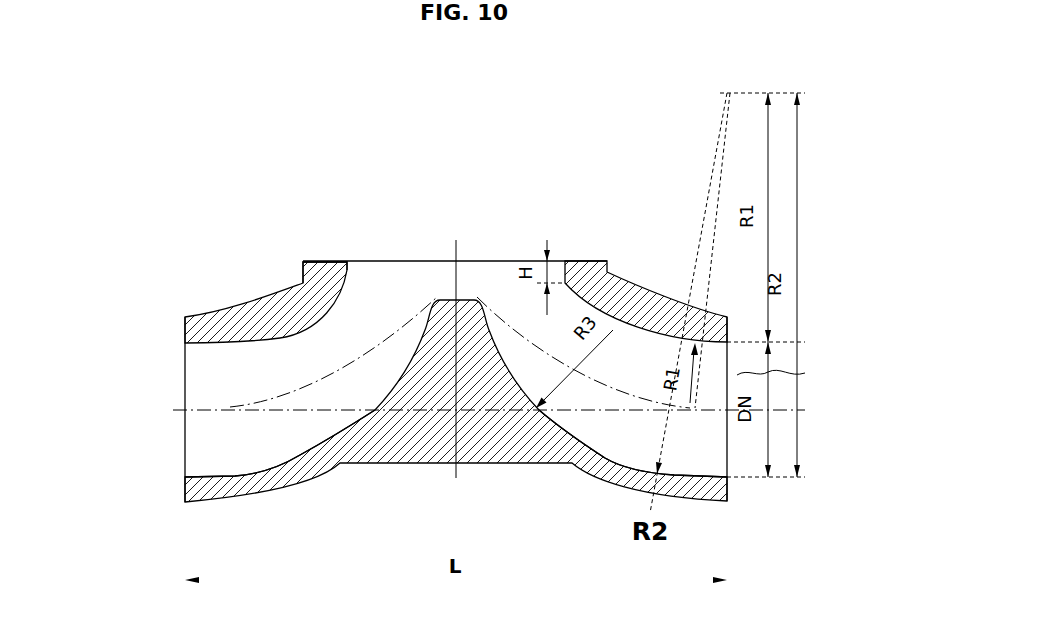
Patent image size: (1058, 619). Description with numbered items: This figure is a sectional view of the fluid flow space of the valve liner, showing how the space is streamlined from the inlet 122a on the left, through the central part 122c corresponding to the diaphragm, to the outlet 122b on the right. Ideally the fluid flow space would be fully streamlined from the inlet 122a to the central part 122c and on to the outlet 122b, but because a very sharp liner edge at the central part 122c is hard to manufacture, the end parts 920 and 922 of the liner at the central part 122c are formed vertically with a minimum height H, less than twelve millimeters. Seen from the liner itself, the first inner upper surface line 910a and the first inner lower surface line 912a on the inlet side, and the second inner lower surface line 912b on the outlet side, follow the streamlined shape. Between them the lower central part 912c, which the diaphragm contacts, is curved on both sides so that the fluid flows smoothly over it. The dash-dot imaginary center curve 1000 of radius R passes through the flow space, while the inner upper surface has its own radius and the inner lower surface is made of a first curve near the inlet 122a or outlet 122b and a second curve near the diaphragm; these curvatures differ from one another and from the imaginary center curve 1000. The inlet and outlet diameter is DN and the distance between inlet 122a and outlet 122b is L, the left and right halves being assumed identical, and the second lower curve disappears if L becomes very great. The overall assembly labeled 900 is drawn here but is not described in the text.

The inlet 122a is at (168, 388).
The outlet 122b is at (752, 377).
The central part 122c is at (401, 260).
The flow guide member 900 is at (436, 378).
The first inner upper surface line 910a is at (233, 309).
The first inner lower surface line 912a is at (270, 478).
The second inner lower surface line 912b is at (597, 464).
The lower central part 912c is at (440, 345).
The end part 920 is at (352, 266).
The end part 922 is at (567, 268).
The imaginary center curve 1000 is at (257, 404).